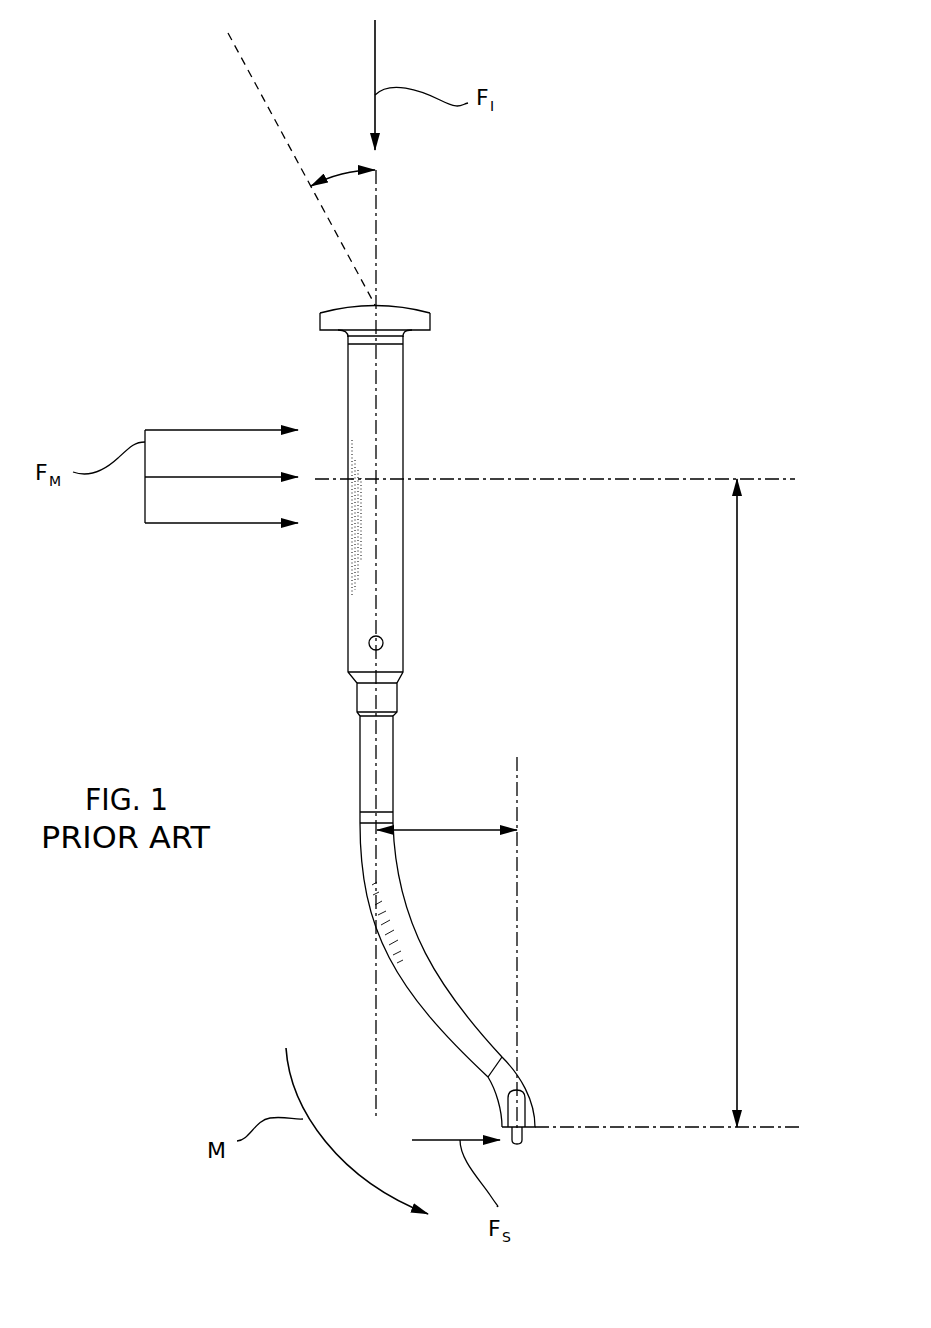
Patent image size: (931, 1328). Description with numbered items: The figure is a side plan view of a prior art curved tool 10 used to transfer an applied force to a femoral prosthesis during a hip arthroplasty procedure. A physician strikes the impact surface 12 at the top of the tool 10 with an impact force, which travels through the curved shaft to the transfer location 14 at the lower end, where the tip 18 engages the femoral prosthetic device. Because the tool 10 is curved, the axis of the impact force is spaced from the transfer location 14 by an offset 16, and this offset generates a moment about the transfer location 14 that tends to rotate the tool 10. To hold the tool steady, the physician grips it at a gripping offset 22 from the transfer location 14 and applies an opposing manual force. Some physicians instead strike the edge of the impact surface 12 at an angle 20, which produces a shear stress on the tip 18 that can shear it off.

The tool 10 is at (518, 692).
The impact surface 12 is at (392, 305).
The transfer location 14 is at (528, 1127).
The offset 16 is at (428, 829).
The tip 18 is at (525, 1132).
The angle 20 is at (350, 173).
The gripping offset 22 is at (737, 752).